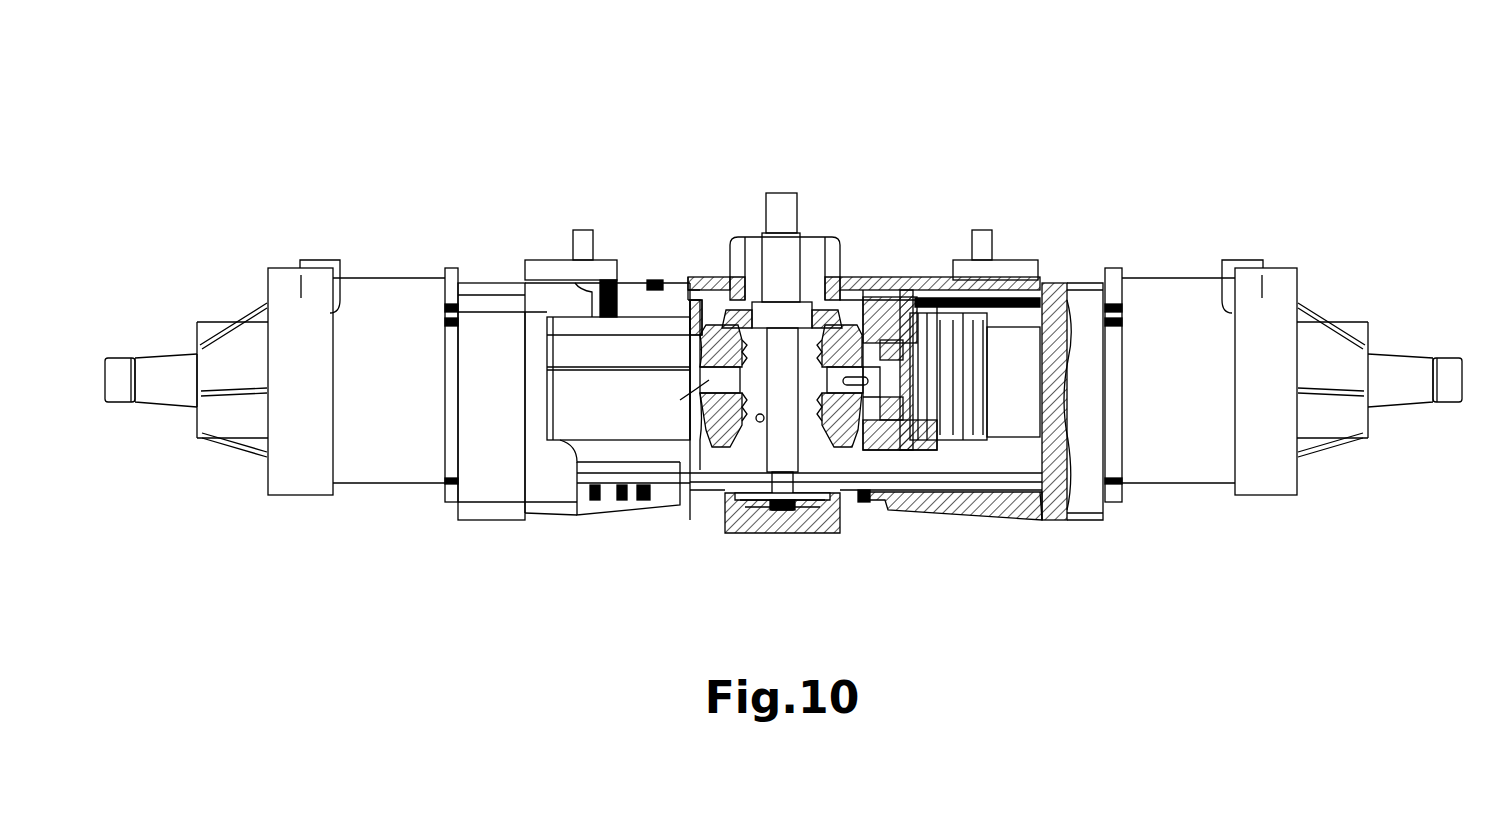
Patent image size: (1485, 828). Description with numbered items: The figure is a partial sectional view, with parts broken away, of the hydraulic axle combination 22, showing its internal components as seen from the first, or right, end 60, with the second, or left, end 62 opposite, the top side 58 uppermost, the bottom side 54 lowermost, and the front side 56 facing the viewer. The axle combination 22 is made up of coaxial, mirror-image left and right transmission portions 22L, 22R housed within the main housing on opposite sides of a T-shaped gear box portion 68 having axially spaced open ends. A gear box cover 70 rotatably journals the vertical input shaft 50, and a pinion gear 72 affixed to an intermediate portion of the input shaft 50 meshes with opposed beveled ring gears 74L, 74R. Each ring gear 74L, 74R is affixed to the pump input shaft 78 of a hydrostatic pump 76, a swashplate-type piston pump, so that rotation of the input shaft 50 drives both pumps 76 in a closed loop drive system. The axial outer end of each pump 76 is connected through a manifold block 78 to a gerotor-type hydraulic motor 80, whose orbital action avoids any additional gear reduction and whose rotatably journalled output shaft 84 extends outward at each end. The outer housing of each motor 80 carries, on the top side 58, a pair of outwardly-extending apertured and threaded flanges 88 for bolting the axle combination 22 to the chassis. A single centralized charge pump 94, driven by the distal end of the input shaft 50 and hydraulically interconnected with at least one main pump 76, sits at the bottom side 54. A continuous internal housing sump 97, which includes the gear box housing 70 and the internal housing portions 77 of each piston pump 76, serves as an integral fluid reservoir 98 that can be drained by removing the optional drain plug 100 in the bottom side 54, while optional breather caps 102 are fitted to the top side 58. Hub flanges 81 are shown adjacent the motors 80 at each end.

The axle combination 22 is at (834, 110).
The right transmission portion 22R is at (537, 212).
The left transmission portion 22L is at (1064, 208).
The input shaft 50 is at (787, 193).
The bottom side 54 is at (983, 518).
The front side 56 is at (622, 405).
The top side 58 is at (860, 277).
The first end 60 is at (265, 283).
The second end 62 is at (1298, 278).
The gear box portion 68 is at (722, 272).
The gear box cover 70 is at (828, 237).
The pinion gear 72 is at (737, 313).
The right beveled ring gear 74R is at (723, 440).
The left beveled ring gear 74L is at (838, 457).
The hydrostatic pump 76 is at (678, 292).
The internal housing portion 77 is at (552, 500).
The pump input shaft 78 is at (488, 290).
The hydraulic motor 80 is at (393, 302).
The hub flange 81 is at (302, 462).
The output shaft 84 is at (160, 373).
The mounting flange 88 is at (327, 258).
The charge pump 94 is at (777, 535).
The internal housing sump 97 is at (983, 515).
The integral fluid reservoir 98 is at (903, 462).
The drain plug 100 is at (865, 502).
The breather cap 102 is at (627, 308).